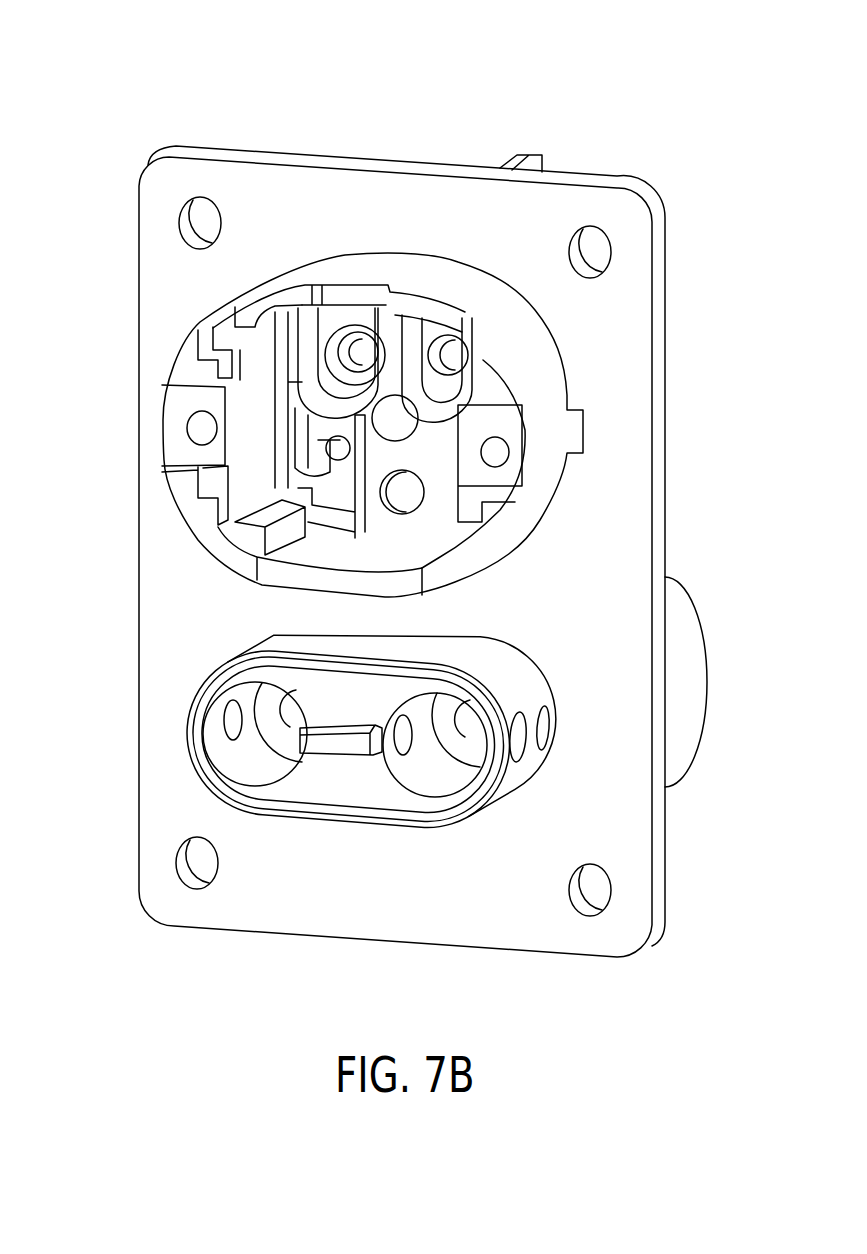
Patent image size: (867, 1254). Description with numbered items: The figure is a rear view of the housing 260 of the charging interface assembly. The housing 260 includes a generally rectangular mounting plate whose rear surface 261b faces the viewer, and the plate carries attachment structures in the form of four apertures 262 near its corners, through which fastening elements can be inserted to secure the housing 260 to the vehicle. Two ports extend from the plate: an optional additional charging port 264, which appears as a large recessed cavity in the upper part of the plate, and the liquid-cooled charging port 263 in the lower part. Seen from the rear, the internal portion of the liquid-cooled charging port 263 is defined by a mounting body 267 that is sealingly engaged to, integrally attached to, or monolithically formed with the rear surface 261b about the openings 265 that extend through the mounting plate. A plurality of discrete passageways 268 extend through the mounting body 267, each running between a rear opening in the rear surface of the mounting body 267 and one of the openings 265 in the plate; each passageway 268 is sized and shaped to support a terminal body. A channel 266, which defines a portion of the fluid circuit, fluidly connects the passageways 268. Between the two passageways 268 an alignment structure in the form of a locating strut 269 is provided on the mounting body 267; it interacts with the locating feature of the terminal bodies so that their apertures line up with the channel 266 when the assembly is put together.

The housing 260 is at (278, 55).
The rear surface of the mounting plate 261b is at (267, 175).
The apertures 262 is at (168, 216).
The liquid-cooled charging port 263 is at (455, 817).
The additional charging port 264 is at (112, 397).
The openings 265 is at (300, 712).
The channel 266 is at (407, 740).
The mounting body 267 is at (510, 680).
The passageways 268 is at (265, 760).
The locating strut 269 is at (333, 745).